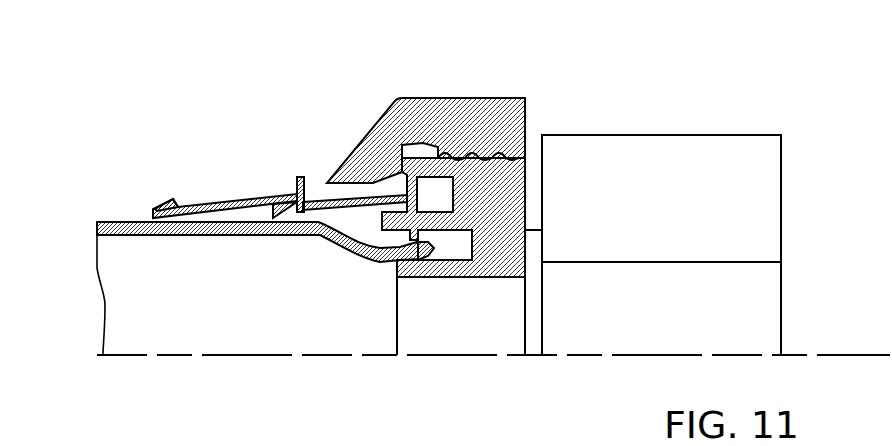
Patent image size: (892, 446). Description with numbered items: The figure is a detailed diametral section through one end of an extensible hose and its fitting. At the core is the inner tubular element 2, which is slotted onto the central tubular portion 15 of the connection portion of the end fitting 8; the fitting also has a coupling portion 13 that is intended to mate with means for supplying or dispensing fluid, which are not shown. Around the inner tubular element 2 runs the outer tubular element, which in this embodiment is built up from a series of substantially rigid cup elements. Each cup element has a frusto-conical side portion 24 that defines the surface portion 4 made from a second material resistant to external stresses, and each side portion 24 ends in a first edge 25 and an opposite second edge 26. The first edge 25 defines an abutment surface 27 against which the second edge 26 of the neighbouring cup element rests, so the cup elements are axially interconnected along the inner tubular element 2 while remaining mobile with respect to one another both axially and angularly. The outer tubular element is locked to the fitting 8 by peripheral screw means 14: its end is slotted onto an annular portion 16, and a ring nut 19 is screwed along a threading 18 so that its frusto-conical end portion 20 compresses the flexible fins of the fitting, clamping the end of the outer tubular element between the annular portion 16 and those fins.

The inner tubular element 2 is at (172, 237).
The surface portion 4 is at (323, 198).
The end fitting 8 is at (673, 133).
The coupling portion 13 is at (740, 150).
The peripheral screw means 14 is at (525, 155).
The central tubular portion 15 is at (412, 278).
The annular portion 16 is at (453, 278).
The threading 18 is at (481, 148).
The ring nut 19 is at (470, 96).
The frusto-conical end portion 20 is at (344, 178).
The frusto-conical side portion 24 is at (223, 200).
The first edge 25 is at (402, 166).
The second edge 26 is at (162, 206).
The abutment surface 27 is at (275, 219).